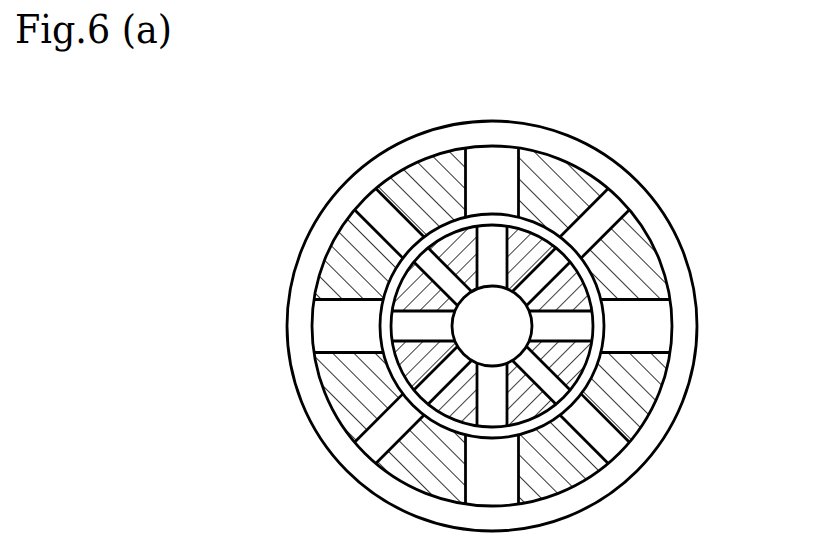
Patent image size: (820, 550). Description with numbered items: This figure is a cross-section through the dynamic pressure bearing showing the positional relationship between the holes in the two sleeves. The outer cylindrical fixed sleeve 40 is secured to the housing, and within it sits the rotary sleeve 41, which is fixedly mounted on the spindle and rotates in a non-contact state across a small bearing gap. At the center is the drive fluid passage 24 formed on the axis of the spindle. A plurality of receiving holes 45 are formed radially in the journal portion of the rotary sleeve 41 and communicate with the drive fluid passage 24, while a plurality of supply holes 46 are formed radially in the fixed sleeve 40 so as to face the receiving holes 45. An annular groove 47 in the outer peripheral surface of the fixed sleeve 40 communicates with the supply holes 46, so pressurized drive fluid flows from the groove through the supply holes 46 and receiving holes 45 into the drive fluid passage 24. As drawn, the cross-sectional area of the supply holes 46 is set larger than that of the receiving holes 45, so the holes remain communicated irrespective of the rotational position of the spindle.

The drive fluid passage 24 is at (473, 320).
The fixed sleeve 40 is at (548, 286).
The rotary sleeve 41 is at (544, 262).
The receiving holes 45 is at (421, 255).
The supply holes 46 is at (483, 157).
The annular groove 47 is at (653, 435).